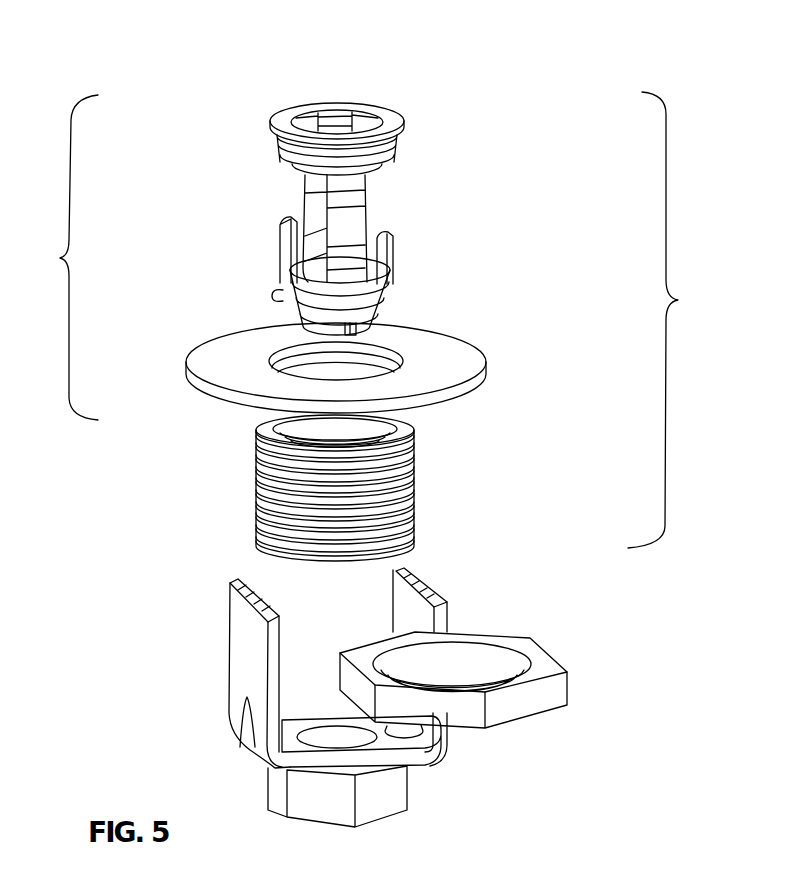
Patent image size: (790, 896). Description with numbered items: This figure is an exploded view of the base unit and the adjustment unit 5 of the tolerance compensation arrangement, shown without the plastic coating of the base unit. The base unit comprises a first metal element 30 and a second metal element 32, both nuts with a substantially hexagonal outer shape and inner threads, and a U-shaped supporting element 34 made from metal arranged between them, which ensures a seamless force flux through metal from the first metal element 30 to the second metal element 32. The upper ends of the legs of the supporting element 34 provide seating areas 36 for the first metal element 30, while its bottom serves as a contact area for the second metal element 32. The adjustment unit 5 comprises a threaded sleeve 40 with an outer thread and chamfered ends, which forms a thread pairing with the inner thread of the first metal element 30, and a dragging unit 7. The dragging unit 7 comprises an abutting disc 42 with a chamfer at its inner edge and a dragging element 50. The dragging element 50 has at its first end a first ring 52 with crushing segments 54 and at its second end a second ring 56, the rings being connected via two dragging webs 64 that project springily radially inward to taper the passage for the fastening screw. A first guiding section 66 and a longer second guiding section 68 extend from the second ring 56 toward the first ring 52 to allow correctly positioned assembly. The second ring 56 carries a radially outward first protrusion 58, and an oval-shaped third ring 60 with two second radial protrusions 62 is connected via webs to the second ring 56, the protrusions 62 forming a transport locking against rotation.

The adjustment unit 5 is at (678, 300).
The dragging unit 7 is at (60, 258).
The first metal element 30 is at (548, 692).
The second metal element 32 is at (312, 798).
The supporting element 34 is at (328, 654).
The seating areas 36 is at (232, 588).
The threaded sleeve 40 is at (413, 482).
The abutting disc 42 is at (437, 363).
The dragging element 50 is at (345, 96).
The first ring 52 is at (282, 118).
The crushing segments 54 is at (352, 152).
The second ring 56 is at (392, 300).
The first protrusion 58 is at (316, 272).
The third ring 60 is at (292, 326).
The second radial protrusions 62 is at (300, 320).
The dragging webs 64 is at (365, 196).
The first guiding section 66 is at (386, 234).
The second guiding section 68 is at (278, 240).